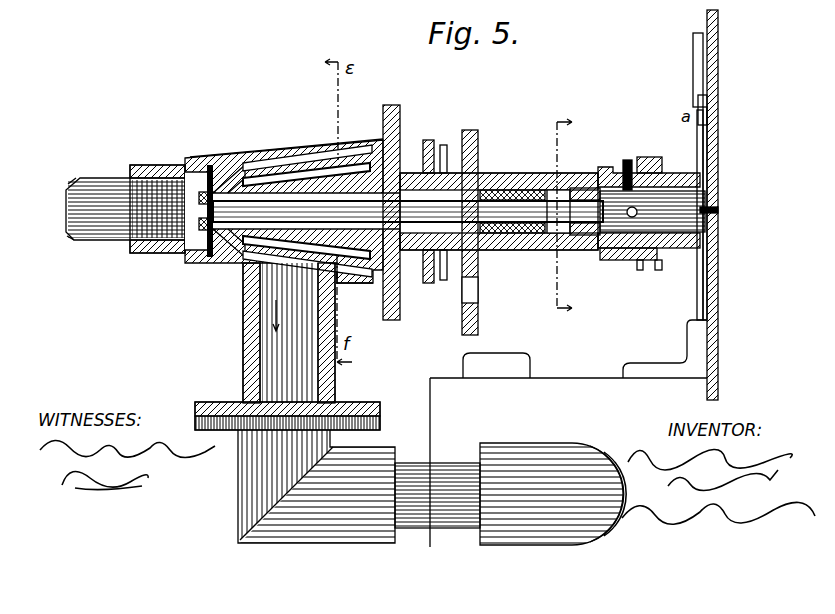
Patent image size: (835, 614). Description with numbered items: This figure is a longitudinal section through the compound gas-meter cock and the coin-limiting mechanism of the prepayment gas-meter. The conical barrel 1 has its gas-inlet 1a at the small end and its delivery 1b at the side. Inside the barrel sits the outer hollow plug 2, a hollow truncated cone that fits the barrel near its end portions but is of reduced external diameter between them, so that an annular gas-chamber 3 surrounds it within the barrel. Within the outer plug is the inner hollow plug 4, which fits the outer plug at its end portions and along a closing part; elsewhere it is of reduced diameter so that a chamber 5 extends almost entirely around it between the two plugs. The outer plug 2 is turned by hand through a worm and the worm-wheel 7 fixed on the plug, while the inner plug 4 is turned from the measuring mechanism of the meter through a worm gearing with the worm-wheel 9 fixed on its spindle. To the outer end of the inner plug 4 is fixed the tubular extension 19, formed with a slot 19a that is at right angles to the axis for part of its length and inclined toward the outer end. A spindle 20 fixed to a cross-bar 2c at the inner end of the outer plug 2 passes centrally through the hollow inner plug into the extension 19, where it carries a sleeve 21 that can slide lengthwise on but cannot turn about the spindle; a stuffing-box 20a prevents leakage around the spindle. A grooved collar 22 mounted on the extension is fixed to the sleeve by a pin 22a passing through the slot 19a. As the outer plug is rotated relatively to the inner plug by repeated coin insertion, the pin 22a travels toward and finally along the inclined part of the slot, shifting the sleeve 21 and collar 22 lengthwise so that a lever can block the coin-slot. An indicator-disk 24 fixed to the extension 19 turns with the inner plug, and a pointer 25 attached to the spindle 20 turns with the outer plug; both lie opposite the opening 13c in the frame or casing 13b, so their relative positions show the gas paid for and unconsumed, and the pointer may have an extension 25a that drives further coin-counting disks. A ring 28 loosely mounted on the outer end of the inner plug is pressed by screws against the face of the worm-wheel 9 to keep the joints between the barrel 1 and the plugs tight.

The barrel 1 is at (292, 156).
The gas-inlet 1a is at (72, 208).
The delivery 1b is at (410, 404).
The outer hollow plug 2 is at (240, 262).
The cross-bar 2c is at (180, 255).
The annular gas-chamber 3 is at (272, 162).
The inner hollow plug 4 is at (342, 275).
The chamber 5 is at (343, 150).
The worm-wheel 7 is at (395, 308).
The worm-wheel 9 is at (430, 140).
The frame or casing 13b is at (720, 52).
The opening 13c is at (712, 122).
The tubular extension 19 is at (488, 250).
The slot 19a is at (614, 168).
The spindle 20 is at (534, 266).
The stuffing-box 20a is at (492, 192).
The sleeve 21 is at (603, 244).
The grooved collar 22 is at (648, 264).
The pin 22a is at (658, 162).
The indicator-disk 24 is at (700, 132).
The pointer 25 is at (718, 198).
The extension 25a is at (700, 44).
The ring 28 is at (450, 150).